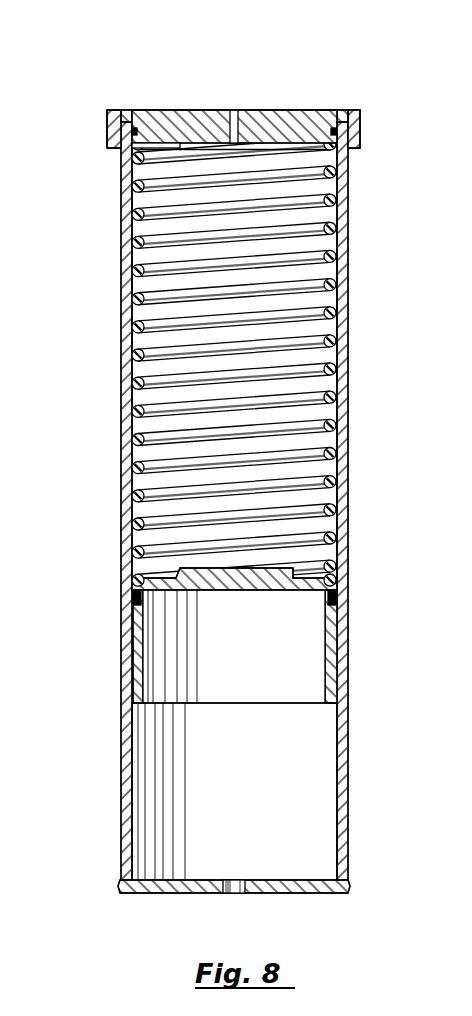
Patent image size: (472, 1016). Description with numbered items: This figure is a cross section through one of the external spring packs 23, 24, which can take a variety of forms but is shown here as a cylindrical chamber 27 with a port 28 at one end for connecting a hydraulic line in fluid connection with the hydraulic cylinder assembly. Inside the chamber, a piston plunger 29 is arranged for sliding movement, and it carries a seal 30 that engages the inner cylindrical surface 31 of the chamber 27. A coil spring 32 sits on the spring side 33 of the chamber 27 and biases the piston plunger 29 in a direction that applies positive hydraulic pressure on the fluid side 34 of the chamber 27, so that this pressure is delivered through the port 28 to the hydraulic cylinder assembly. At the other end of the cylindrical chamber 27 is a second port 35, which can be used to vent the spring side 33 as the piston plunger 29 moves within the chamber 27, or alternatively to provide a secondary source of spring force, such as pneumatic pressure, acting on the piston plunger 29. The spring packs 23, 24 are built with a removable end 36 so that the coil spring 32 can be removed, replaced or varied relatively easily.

The spring pack 23 is at (209, 79).
The spring pack 24 is at (209, 79).
The removable end 36 is at (191, 112).
The second port 35 is at (236, 112).
The coil spring 32 is at (287, 177).
The spring side 33 is at (207, 480).
The seal 30 is at (135, 600).
The piston plunger 29 is at (263, 592).
The cylindrical chamber 27 is at (270, 736).
The fluid side 34 is at (225, 778).
The inner cylindrical surface 31 is at (134, 811).
The port 28 is at (235, 893).